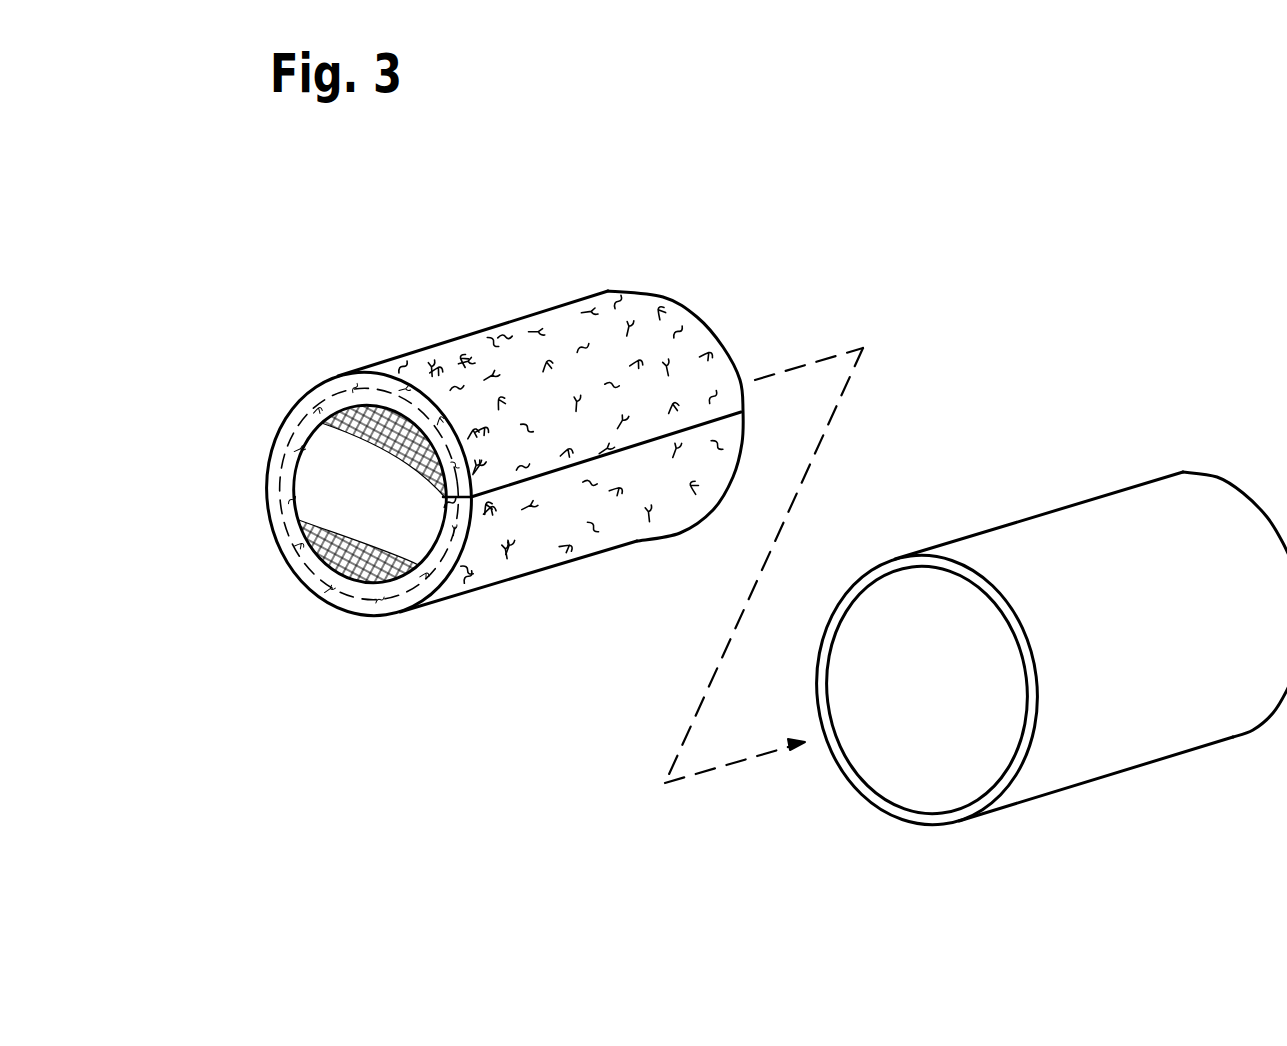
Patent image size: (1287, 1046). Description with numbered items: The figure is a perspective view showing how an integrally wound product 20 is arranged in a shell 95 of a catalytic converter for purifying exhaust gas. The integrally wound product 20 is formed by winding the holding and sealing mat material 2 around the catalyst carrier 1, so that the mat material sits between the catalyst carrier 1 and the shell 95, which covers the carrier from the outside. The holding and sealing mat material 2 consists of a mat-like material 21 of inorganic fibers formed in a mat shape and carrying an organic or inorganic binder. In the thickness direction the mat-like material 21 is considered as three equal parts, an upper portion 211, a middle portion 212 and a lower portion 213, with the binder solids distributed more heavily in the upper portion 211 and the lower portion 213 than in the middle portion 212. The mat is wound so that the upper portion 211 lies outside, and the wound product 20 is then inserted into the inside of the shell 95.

The catalyst carrier 1 is at (392, 515).
The holding and sealing mat material 2 is at (272, 440).
The integrally wound product 20 is at (678, 263).
The mat-like material 21 is at (485, 347).
The upper portion 211 is at (272, 503).
The middle portion 212 is at (287, 543).
The lower portion 213 is at (310, 583).
The shell 95 is at (888, 802).